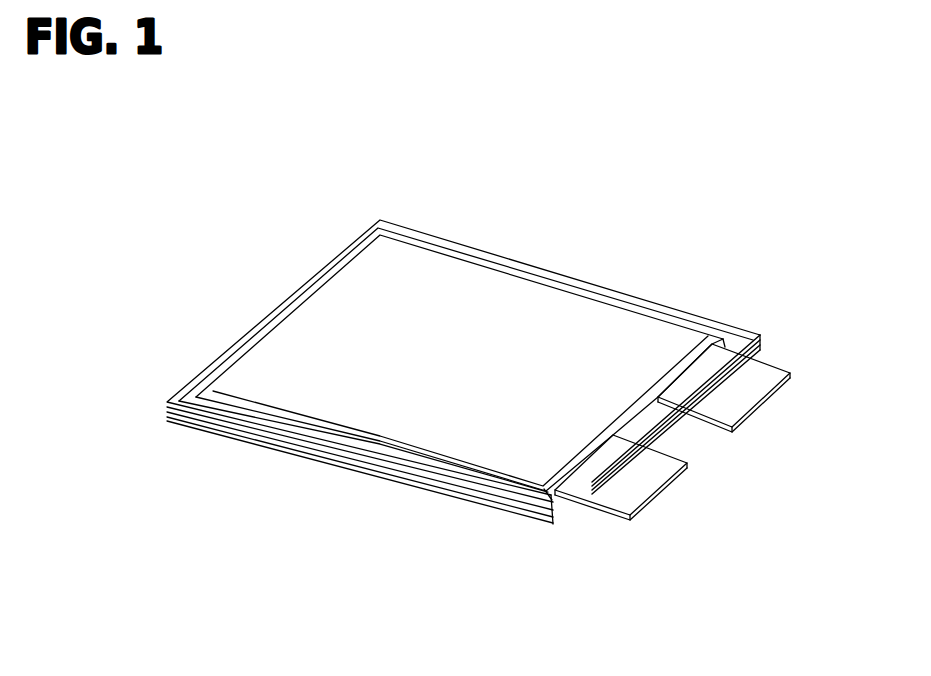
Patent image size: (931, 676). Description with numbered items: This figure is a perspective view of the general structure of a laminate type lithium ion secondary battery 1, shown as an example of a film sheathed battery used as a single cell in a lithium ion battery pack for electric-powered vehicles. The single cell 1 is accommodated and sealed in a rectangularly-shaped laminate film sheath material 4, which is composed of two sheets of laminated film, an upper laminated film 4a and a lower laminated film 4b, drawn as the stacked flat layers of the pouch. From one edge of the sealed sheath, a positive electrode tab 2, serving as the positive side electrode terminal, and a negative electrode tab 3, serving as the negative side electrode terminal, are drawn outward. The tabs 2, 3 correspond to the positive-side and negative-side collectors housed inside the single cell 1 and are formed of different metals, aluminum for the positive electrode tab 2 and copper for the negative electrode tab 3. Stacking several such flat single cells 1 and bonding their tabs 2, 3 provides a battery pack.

The laminate type lithium ion secondary battery 1 is at (463, 398).
The positive electrode tab 2 is at (650, 478).
The negative electrode tab 3 is at (753, 388).
The laminate film sheath material 4 is at (463, 424).
The upper laminated film 4a is at (331, 406).
The lower laminated film 4b is at (460, 503).